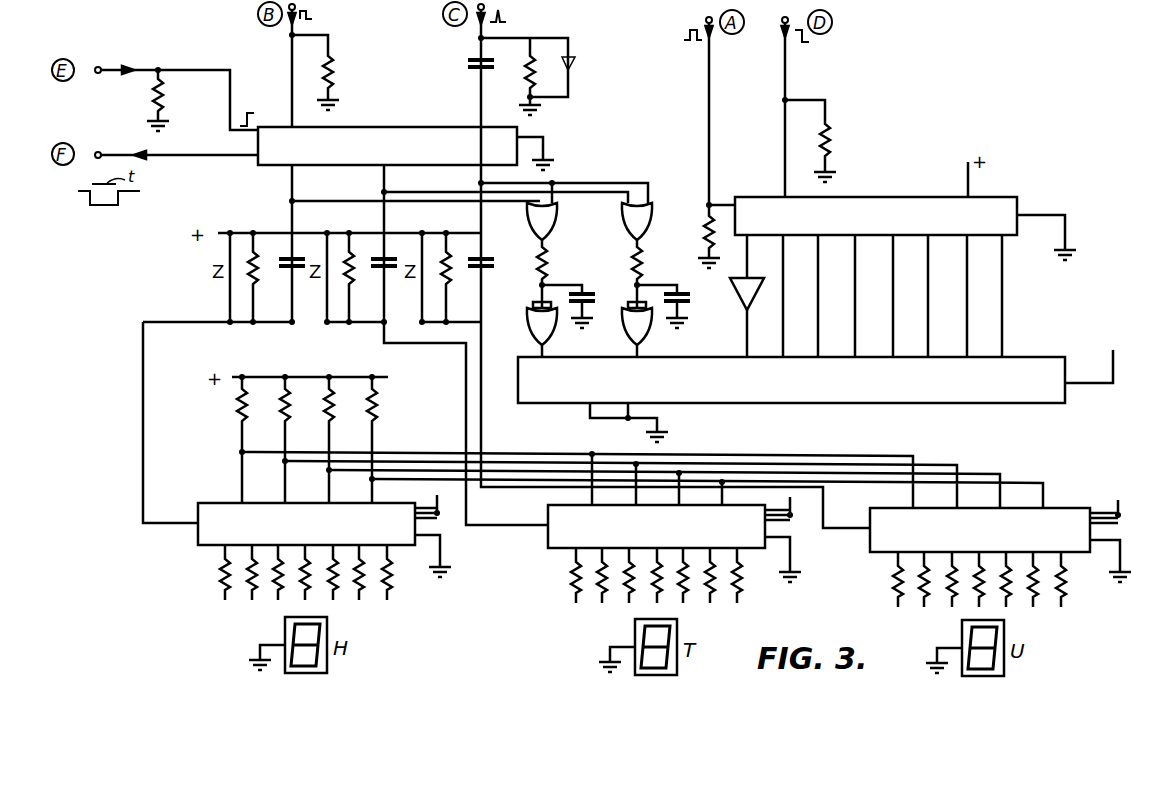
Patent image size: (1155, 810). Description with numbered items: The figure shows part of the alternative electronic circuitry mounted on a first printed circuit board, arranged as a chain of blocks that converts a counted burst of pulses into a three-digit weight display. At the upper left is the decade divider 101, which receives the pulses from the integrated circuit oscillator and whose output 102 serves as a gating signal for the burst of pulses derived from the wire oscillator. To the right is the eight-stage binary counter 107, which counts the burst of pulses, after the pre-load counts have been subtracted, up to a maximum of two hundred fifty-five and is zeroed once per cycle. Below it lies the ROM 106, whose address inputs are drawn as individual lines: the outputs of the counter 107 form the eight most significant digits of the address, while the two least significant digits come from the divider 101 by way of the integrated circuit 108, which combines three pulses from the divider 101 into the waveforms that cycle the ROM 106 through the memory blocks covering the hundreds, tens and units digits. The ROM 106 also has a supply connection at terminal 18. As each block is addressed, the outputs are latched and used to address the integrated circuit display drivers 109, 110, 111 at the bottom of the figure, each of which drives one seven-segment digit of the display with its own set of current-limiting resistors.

The decade divider 101 is at (505, 133).
The output of divider 102 is at (243, 157).
The ROM 106 is at (1027, 404).
The 8-stage binary counter 107 is at (997, 212).
The integrated circuit 108 is at (553, 183).
The display driver 109 is at (220, 516).
The display driver 110 is at (562, 528).
The display driver 111 is at (885, 531).
The counter supply terminal 18 is at (1085, 369).